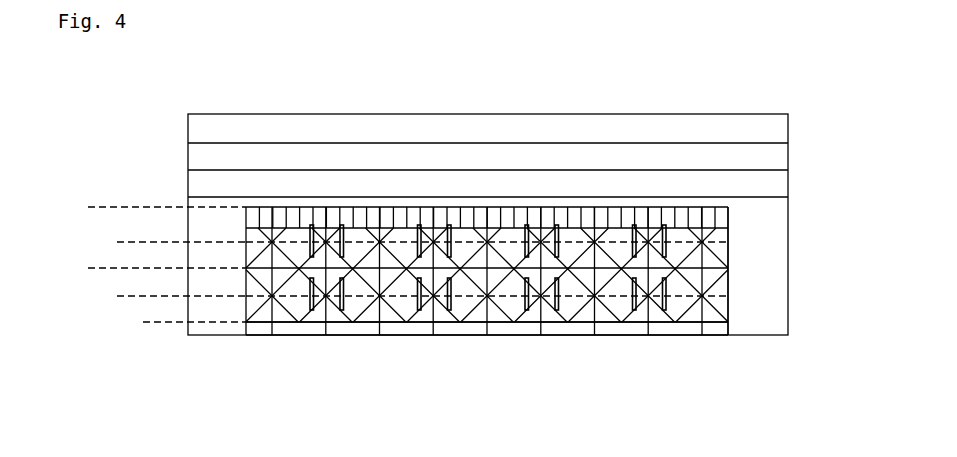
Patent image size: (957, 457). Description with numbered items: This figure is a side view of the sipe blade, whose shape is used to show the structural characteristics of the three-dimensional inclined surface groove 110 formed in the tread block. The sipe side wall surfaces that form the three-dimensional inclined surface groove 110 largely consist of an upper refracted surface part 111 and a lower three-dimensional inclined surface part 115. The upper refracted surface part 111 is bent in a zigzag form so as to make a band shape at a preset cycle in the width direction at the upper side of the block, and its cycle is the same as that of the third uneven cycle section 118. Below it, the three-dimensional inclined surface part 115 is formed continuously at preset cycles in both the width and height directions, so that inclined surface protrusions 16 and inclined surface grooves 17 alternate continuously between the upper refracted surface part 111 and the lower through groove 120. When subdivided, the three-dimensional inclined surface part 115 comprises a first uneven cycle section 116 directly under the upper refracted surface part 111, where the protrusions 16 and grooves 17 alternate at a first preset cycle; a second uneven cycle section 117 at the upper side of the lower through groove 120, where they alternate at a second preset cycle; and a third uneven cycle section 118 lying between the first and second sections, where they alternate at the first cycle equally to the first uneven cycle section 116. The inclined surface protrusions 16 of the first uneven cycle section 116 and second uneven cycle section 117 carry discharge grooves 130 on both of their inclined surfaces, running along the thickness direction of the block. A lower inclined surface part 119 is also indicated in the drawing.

The lower through groove 120 is at (776, 155).
The lower inclined surface part 119 is at (288, 218).
The second uneven cycle section 117 is at (98, 207).
The third uneven cycle section 118 is at (128, 242).
The first uneven cycle section 116 is at (154, 268).
The discharge groove 130 is at (415, 296).
The inclined surface protrusion 16 is at (439, 298).
The inclined surface groove 17 is at (494, 302).
The upper refracted surface part 111 is at (683, 334).
The three-dimensional inclined surface part 115 is at (722, 306).
The three-dimensional inclined surface groove 110 is at (679, 409).